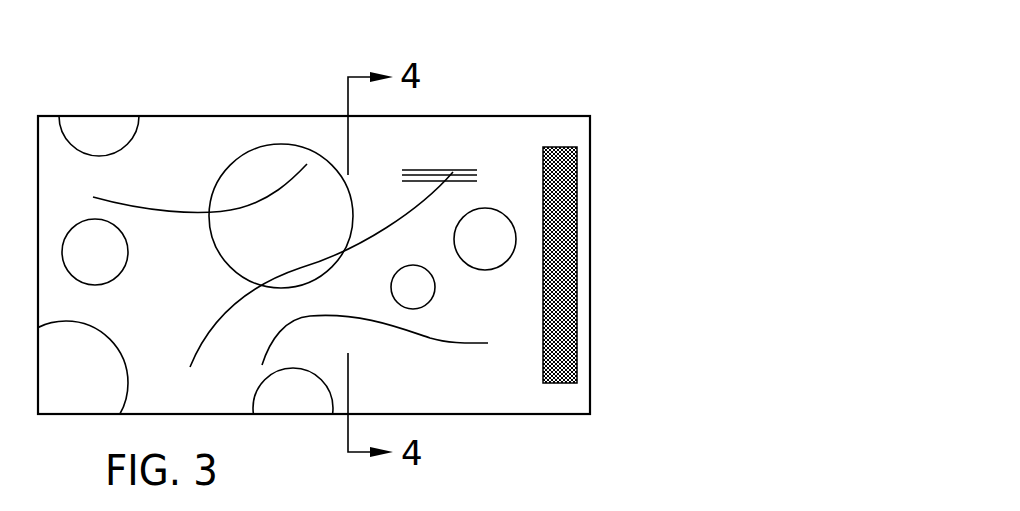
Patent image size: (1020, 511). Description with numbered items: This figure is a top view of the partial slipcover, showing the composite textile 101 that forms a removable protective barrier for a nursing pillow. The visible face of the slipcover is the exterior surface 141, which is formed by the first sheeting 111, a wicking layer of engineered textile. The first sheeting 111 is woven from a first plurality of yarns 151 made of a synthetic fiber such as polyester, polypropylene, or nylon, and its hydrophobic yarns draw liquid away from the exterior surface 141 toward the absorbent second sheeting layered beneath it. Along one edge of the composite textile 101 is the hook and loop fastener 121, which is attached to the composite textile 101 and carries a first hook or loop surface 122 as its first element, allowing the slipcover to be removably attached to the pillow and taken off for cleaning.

The composite textile 101 is at (77, 117).
The exterior surface 141 is at (157, 143).
The first sheeting 111 is at (515, 155).
The first plurality of yarns 151 is at (423, 170).
The hook and loop fastener 121 is at (558, 210).
The first hook or loop surface 122 is at (568, 267).